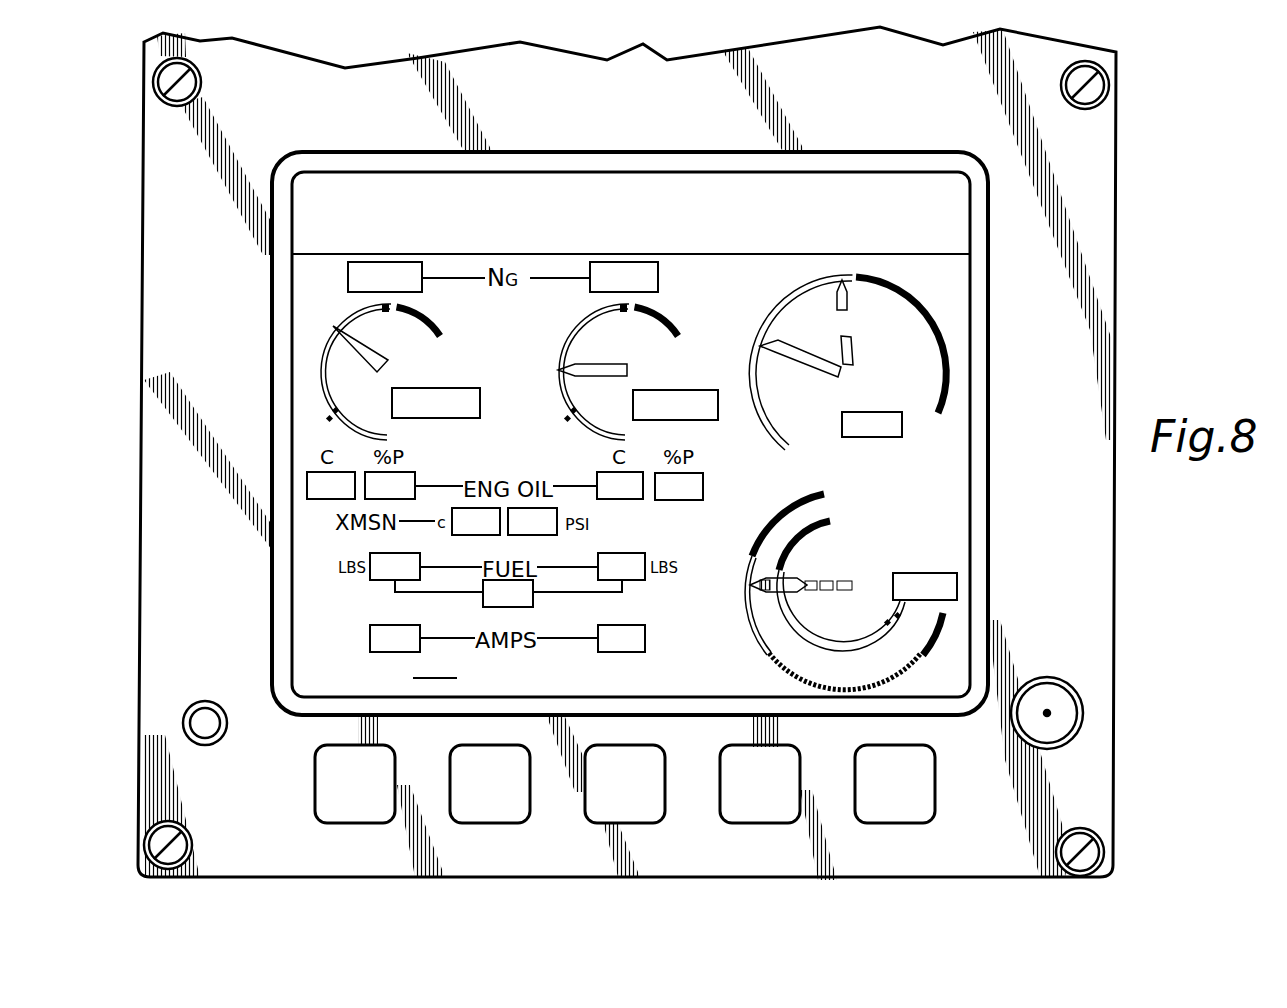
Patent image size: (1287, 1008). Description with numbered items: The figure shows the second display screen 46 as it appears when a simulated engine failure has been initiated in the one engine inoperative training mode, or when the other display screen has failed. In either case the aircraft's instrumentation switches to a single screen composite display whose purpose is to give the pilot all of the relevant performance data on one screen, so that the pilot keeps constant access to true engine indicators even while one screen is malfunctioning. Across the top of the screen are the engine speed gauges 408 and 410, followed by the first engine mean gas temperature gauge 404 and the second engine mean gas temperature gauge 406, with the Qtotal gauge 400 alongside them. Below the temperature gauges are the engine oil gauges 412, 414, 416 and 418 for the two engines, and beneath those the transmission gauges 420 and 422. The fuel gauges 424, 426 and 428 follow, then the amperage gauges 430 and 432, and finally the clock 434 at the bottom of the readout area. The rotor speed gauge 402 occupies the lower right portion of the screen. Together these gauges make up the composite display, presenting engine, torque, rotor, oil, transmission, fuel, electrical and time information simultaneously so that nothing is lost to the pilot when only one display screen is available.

The instrument display panel 46 is at (1135, 147).
The Qtotal gauge 400 is at (935, 316).
The rotor speed gauge 402 is at (925, 650).
The first engine mean gas temperature gauge 404 is at (314, 373).
The second engine mean gas temperature gauge 406 is at (572, 318).
The engine speed gauge 408 is at (397, 262).
The engine speed gauge 410 is at (633, 262).
The engine oil gauge 412 is at (323, 499).
The engine oil gauge 414 is at (407, 472).
The engine oil gauge 416 is at (628, 502).
The engine oil gauge 418 is at (680, 502).
The transmission gauge 420 is at (470, 536).
The transmission gauge 422 is at (540, 535).
The fuel gauge 424 is at (387, 580).
The fuel gauge 426 is at (637, 581).
The fuel gauge 428 is at (503, 607).
The amperage gauge 430 is at (370, 640).
The amperage gauge 432 is at (630, 652).
The clock 434 is at (518, 689).